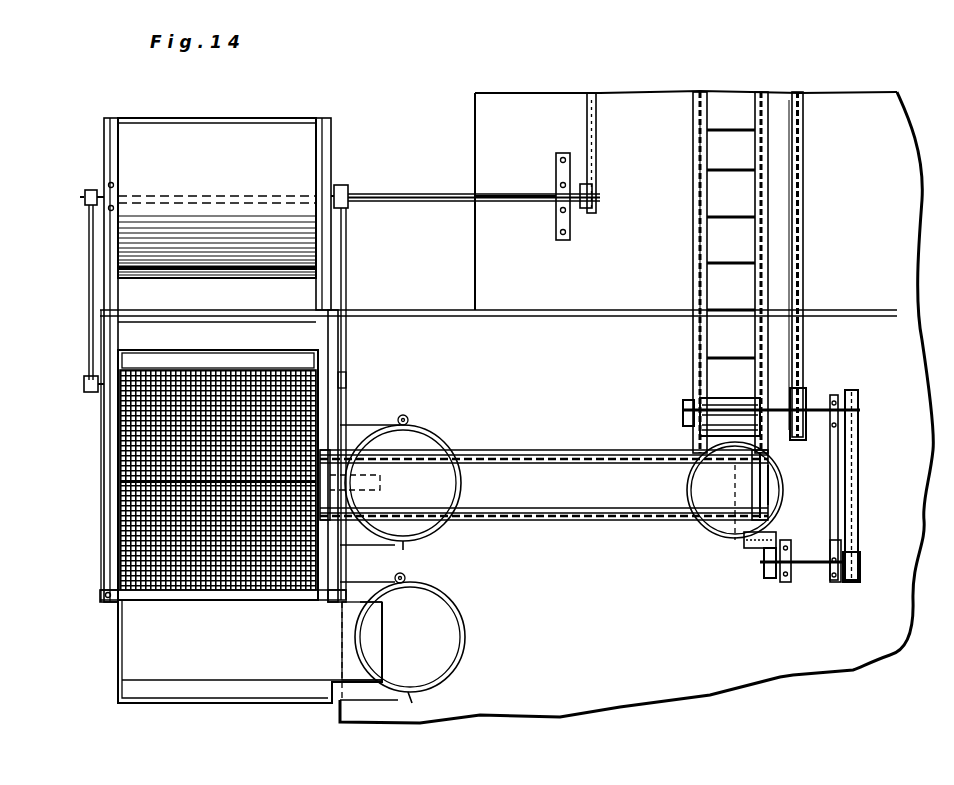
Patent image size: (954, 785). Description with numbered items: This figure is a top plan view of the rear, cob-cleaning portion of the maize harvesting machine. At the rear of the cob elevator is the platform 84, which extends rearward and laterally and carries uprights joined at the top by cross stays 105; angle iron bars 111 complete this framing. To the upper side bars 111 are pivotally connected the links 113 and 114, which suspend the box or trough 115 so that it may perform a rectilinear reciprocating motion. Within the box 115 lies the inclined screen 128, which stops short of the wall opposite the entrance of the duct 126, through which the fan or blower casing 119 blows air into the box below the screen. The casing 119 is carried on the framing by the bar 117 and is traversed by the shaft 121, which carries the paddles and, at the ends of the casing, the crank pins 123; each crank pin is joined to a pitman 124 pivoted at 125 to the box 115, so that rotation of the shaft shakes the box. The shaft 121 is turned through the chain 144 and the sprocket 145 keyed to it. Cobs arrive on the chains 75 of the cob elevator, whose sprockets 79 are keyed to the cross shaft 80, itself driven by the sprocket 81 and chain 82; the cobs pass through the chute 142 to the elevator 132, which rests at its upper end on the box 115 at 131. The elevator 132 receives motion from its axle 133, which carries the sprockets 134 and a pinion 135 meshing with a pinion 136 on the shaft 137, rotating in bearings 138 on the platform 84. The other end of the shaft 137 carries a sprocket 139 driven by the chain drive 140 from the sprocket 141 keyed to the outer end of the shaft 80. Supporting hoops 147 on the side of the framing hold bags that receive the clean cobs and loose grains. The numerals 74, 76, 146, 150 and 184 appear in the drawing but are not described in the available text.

The guide rail 74 is at (792, 276).
The chains of the elevator 75 is at (792, 235).
The ladder rail 76 is at (722, 320).
The sprockets 79 is at (700, 400).
The cross shaft 80 is at (738, 400).
The sprocket 81 is at (806, 393).
The chain 82 is at (803, 188).
The platform 84 is at (516, 407).
The cross stays 105 is at (200, 303).
The angle iron bars 111 is at (104, 505).
The link 113 is at (340, 400).
The link 114 is at (110, 570).
The box or trough 115 is at (120, 440).
The bar 117 is at (425, 183).
The fan or blower casing 119 is at (217, 198).
The shaft 121 is at (503, 193).
The crank pins 123 is at (85, 194).
The pitman 124 is at (346, 258).
The pivot of pitman to box 125 is at (84, 383).
The duct 126 is at (217, 330).
The inclined screen 128 is at (120, 460).
The resting point of elevator on box 131 is at (352, 505).
The elevator 132 is at (555, 473).
The axle 133 is at (752, 478).
The sprockets 134 is at (768, 496).
The pinion 135 is at (765, 550).
The pinion 136 is at (774, 578).
The shaft 137 is at (790, 550).
The bearings 138 is at (836, 578).
The sprocket 139 is at (860, 560).
The chain drive 140 is at (858, 442).
The sprocket 141 is at (858, 402).
The chute 142 is at (712, 532).
The chain 144 is at (596, 150).
The sprocket 145 is at (597, 186).
The wheel 146 is at (440, 596).
The supporting hoops 147 is at (440, 438).
The box 150 is at (382, 625).
The crank bar 184 is at (88, 260).